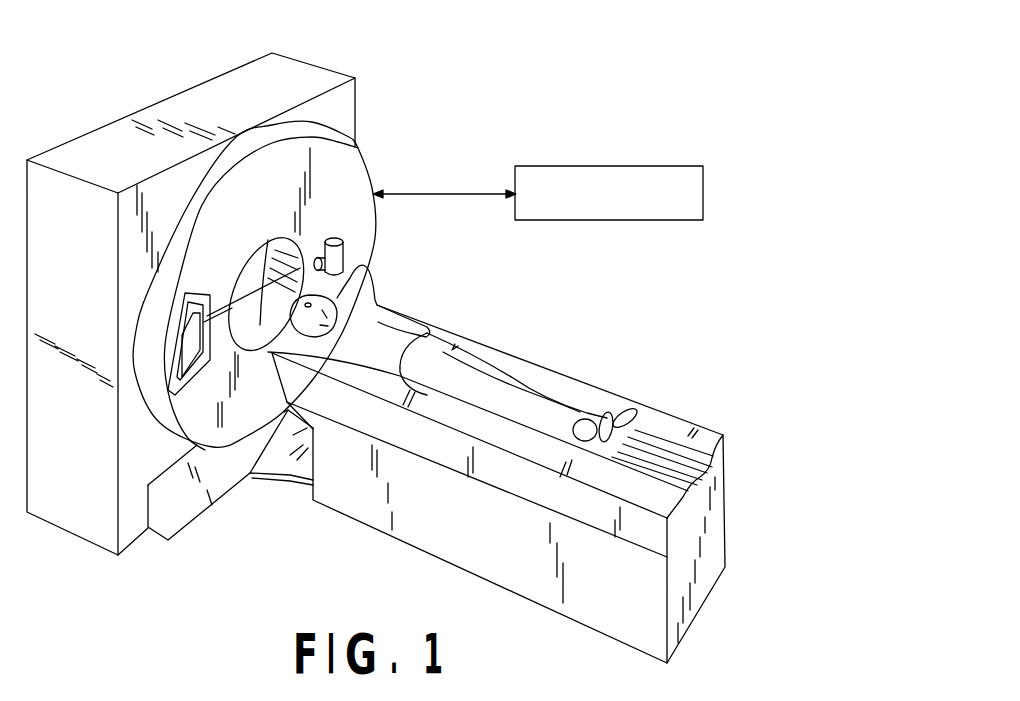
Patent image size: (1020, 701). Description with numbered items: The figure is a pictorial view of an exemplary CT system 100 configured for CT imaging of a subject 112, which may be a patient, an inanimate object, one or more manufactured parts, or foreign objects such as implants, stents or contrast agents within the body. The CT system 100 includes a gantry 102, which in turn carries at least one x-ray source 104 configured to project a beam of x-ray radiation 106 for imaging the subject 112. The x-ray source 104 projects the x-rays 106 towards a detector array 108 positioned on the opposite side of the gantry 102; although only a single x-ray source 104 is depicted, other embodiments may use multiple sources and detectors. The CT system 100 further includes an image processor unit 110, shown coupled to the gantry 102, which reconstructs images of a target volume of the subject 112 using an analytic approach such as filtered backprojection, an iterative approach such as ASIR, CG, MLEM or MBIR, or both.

The CT system 100 is at (647, 38).
The gantry 102 is at (352, 198).
The x-ray source 104 is at (343, 258).
The beam of x-ray radiation 106 is at (240, 307).
The detector array 108 is at (193, 368).
The image processor unit 110 is at (660, 166).
The subject 112 is at (388, 320).